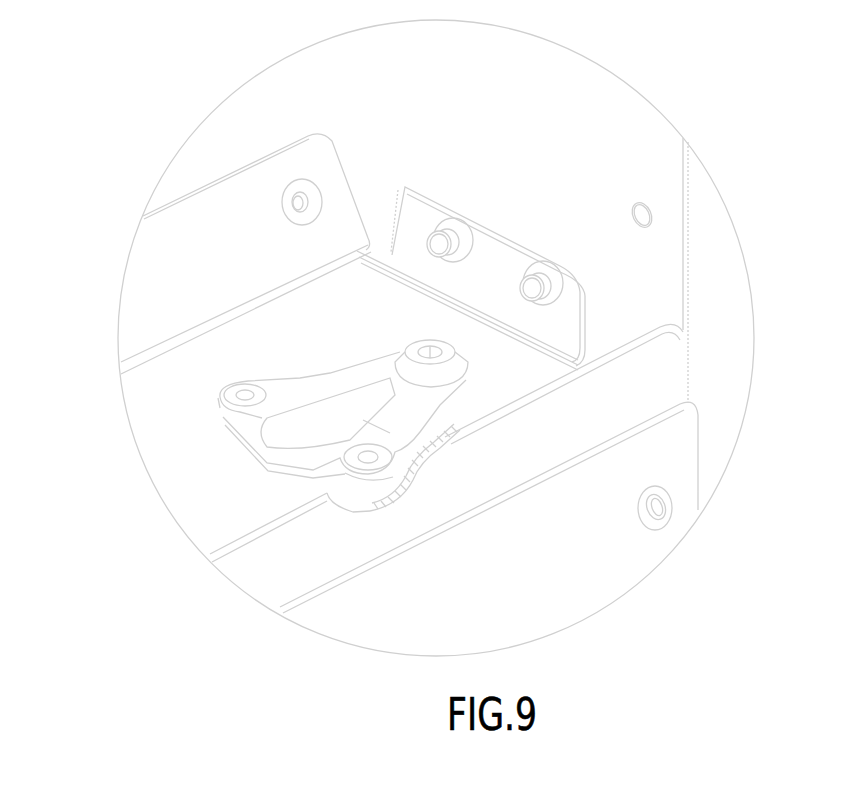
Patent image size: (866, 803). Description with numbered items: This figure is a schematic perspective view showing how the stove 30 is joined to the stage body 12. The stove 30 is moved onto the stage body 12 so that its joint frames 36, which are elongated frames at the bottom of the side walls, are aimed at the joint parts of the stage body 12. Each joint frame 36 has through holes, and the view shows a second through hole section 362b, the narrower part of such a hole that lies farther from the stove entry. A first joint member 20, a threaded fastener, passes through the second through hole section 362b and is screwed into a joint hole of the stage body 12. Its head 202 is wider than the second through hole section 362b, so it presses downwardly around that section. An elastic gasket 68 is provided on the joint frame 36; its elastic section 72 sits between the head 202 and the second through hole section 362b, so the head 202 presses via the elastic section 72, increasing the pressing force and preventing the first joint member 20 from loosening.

The stage body 12 is at (600, 585).
The first joint member 20 is at (482, 351).
The stove 30 is at (708, 217).
The joint frame 36 is at (162, 447).
The elastic gasket 68 is at (340, 362).
The elastic section 72 is at (368, 367).
The head 202 is at (445, 372).
The second through hole section 362b is at (358, 400).